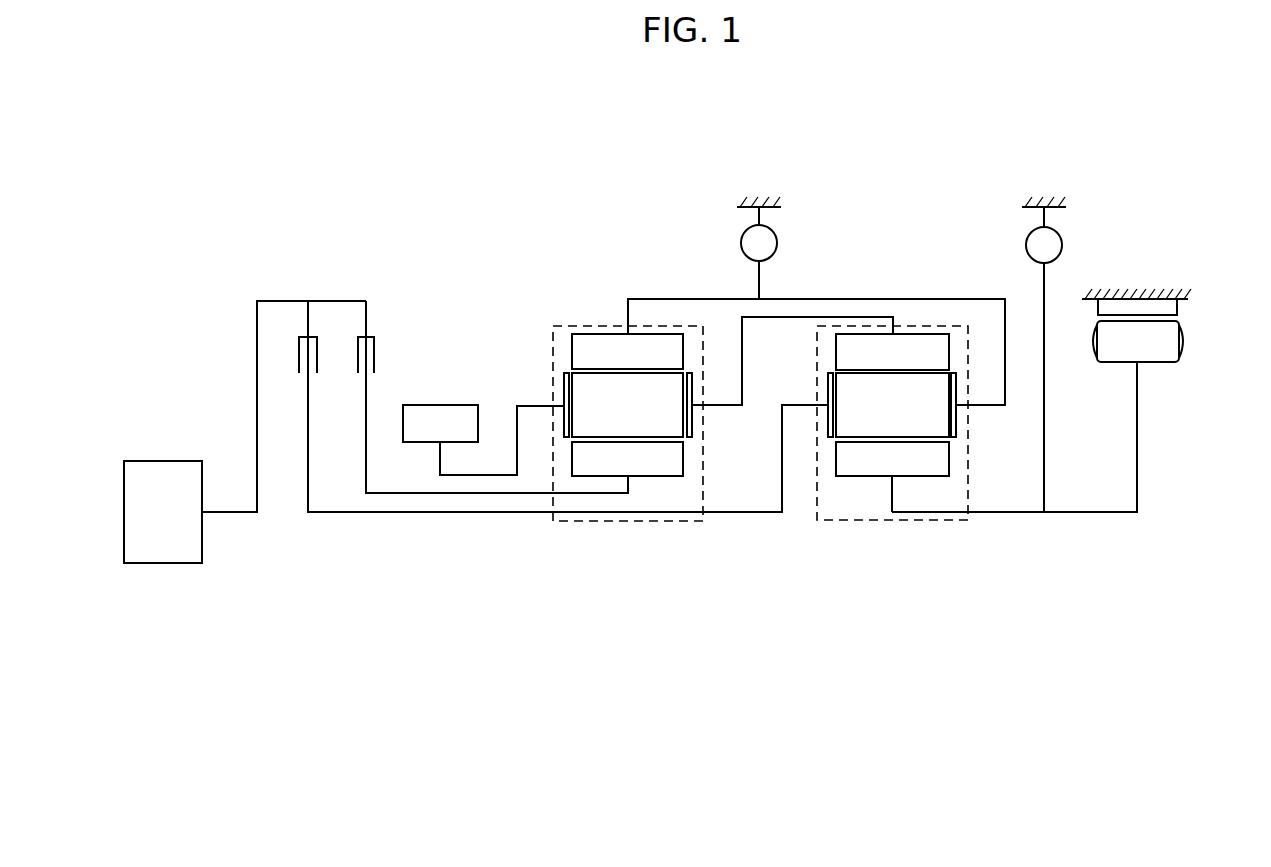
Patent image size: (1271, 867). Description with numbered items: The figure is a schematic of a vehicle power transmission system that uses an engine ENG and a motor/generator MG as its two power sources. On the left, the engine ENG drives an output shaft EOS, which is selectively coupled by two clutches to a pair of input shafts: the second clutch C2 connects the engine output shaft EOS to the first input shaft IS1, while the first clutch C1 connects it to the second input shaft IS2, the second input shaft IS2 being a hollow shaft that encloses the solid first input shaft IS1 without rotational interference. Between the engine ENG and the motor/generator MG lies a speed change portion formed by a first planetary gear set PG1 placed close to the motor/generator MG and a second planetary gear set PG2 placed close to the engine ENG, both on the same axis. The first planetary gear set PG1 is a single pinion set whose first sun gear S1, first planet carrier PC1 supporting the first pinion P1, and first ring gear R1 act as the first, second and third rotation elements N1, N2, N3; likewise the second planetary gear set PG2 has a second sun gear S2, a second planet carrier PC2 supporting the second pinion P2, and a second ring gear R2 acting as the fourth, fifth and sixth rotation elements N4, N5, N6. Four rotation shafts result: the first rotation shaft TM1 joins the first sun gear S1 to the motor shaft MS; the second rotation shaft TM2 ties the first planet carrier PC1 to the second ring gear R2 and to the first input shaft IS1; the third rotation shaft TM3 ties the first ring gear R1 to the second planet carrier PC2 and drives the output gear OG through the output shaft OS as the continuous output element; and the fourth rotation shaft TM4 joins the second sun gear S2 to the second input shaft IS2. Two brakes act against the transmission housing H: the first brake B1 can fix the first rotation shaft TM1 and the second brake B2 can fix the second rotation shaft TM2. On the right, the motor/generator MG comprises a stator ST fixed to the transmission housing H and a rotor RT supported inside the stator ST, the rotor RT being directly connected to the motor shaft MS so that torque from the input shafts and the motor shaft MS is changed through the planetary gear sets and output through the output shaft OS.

The engine ENG is at (163, 512).
The output shaft of the engine EOS is at (236, 514).
The first clutch C1 is at (380, 351).
The second clutch C2 is at (320, 322).
The first input shaft IS1 is at (435, 515).
The second input shaft IS2 is at (384, 496).
The output gear OG is at (440, 423).
The output shaft OS is at (489, 478).
The first planetary gear set PG1 is at (862, 464).
The second planetary gear set PG2 is at (597, 463).
The first pinion P1 is at (856, 380).
The second pinion P2 is at (591, 380).
The first rotation element N1 is at (892, 459).
The first sun gear S1 is at (892, 459).
The second rotation element N2 is at (794, 380).
The first planet carrier PC1 is at (826, 380).
The third rotation element N3 is at (892, 352).
The first ring gear R1 is at (892, 352).
The fourth rotation element N4 is at (627, 459).
The second sun gear S2 is at (627, 459).
The fifth rotation element N5 is at (530, 380).
The second planet carrier PC2 is at (562, 382).
The sixth rotation element N6 is at (627, 351).
The second ring gear R2 is at (627, 351).
The first rotation shaft TM1 is at (880, 492).
The second rotation shaft TM2 is at (882, 290).
The third rotation shaft TM3 is at (733, 322).
The fourth rotation shaft TM4 is at (645, 500).
The first brake B1 is at (1044, 359).
The second brake B2 is at (759, 253).
The transmission housing H is at (758, 195).
The motor/generator MG is at (1179, 327).
The stator ST is at (1178, 305).
The rotor RT is at (1160, 341).
The motor shaft MS is at (1088, 515).